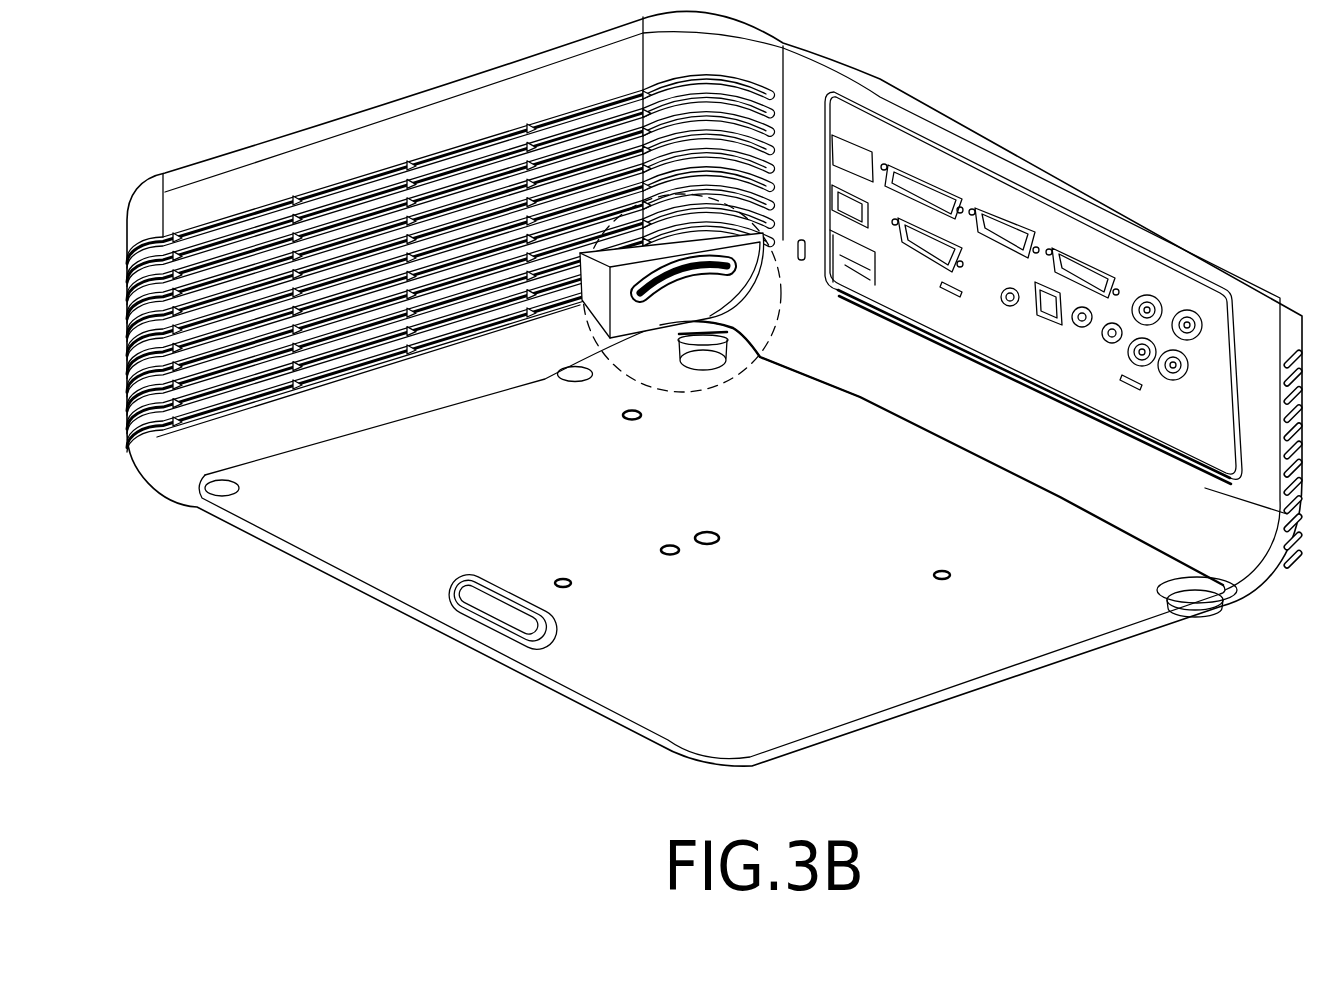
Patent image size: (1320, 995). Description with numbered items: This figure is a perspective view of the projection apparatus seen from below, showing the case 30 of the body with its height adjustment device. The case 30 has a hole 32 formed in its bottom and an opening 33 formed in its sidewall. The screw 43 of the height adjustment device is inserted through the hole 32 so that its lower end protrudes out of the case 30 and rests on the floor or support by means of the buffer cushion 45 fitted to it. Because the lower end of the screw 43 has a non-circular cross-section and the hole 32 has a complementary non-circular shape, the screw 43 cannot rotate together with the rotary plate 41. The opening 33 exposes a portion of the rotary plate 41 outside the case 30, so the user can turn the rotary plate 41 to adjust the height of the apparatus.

The case 30 is at (1003, 150).
The hole 32 is at (715, 324).
The opening 33 is at (637, 293).
The rotary plate 41 is at (703, 297).
The screw 43 is at (690, 326).
The buffer cushion 45 is at (701, 358).